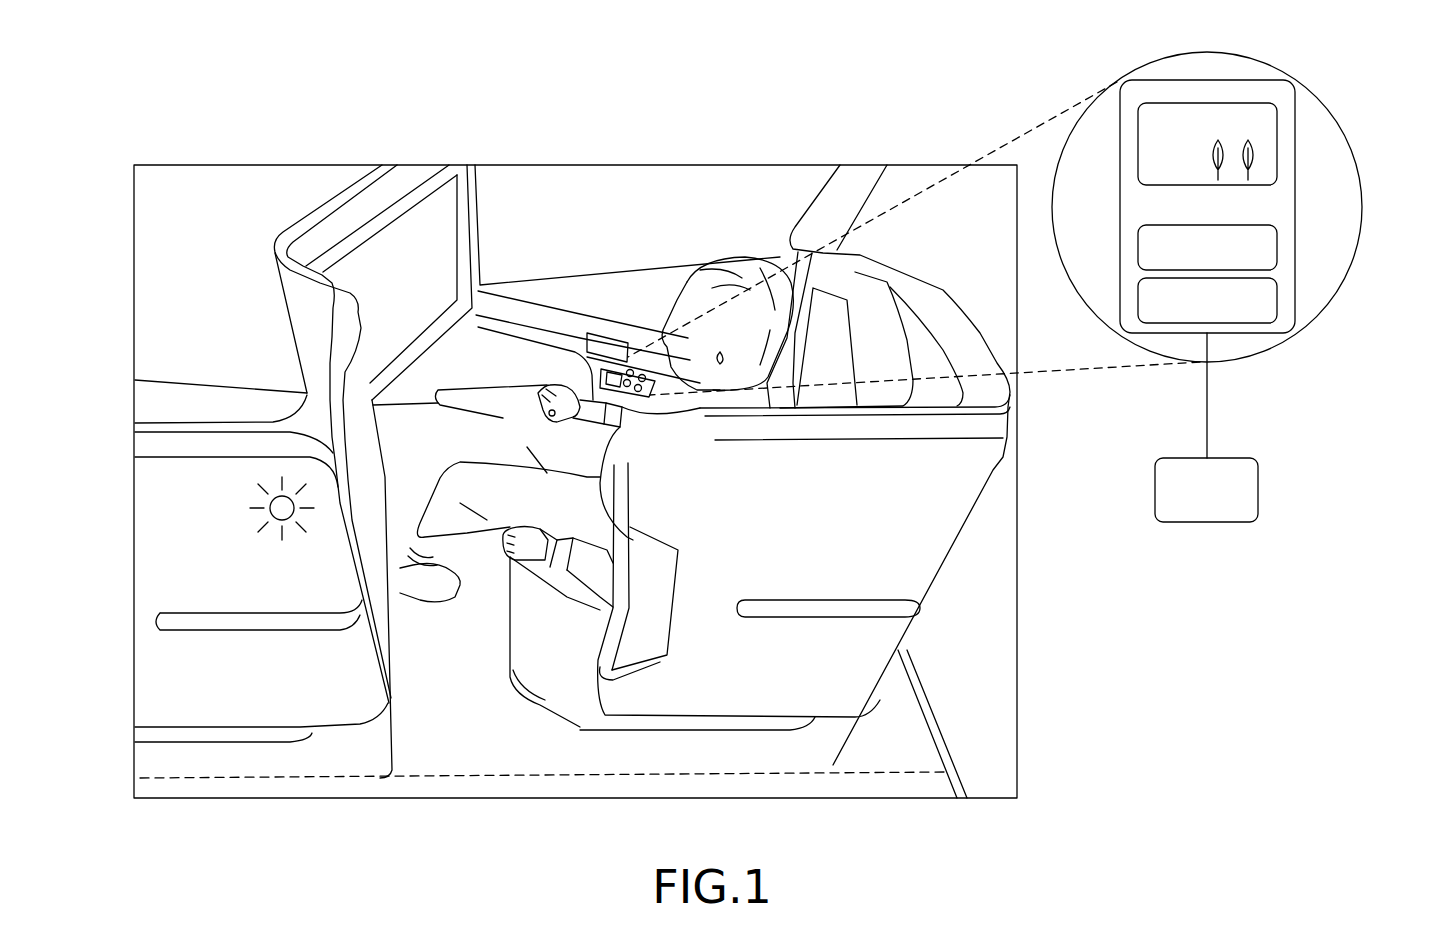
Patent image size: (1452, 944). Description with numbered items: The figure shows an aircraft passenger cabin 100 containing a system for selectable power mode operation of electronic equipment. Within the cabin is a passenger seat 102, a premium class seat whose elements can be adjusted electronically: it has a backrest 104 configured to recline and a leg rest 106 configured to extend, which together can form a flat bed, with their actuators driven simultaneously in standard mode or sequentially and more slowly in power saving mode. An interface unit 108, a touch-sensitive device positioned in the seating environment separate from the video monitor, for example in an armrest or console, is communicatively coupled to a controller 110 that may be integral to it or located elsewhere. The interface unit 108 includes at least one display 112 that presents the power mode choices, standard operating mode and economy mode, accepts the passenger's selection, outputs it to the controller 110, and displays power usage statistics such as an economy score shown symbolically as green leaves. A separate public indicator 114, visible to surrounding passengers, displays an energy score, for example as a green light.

The aircraft passenger cabin 100 is at (560, 137).
The passenger seat 102 is at (560, 623).
The backrest 104 is at (822, 308).
The leg rest 106 is at (507, 591).
The interface unit 108 is at (1013, 209).
The controller 110 is at (1227, 504).
The display 112 is at (1277, 143).
The public indicator 114 is at (268, 502).